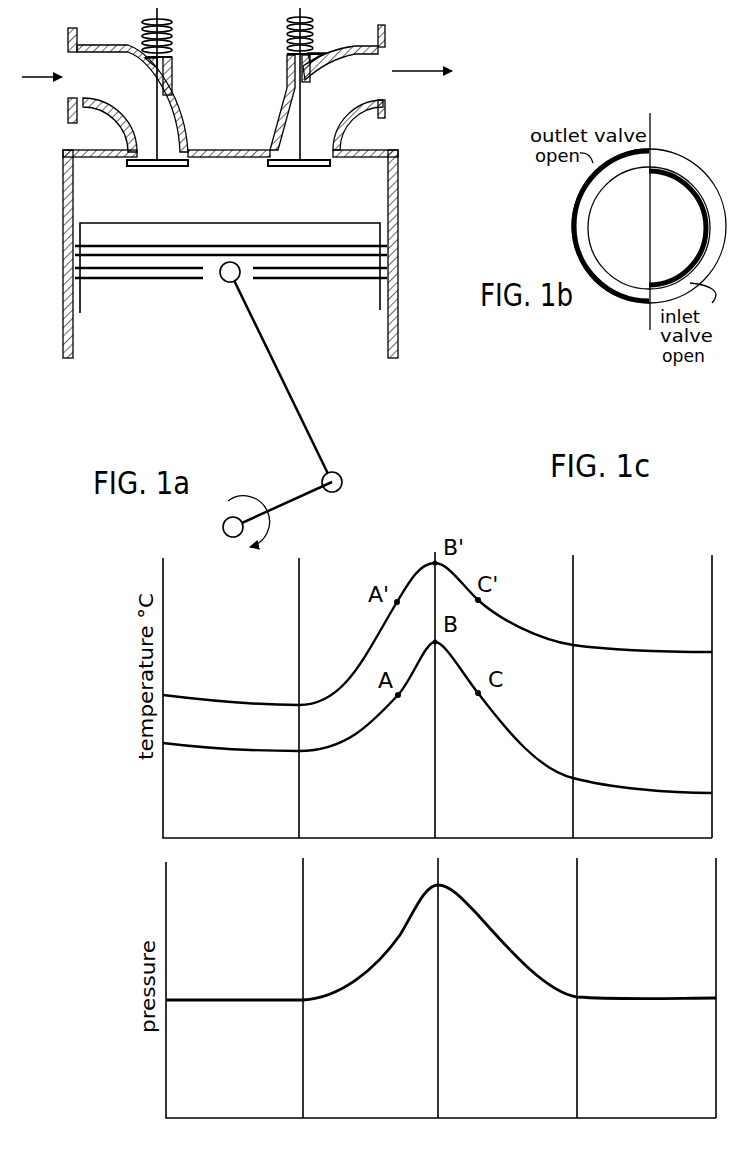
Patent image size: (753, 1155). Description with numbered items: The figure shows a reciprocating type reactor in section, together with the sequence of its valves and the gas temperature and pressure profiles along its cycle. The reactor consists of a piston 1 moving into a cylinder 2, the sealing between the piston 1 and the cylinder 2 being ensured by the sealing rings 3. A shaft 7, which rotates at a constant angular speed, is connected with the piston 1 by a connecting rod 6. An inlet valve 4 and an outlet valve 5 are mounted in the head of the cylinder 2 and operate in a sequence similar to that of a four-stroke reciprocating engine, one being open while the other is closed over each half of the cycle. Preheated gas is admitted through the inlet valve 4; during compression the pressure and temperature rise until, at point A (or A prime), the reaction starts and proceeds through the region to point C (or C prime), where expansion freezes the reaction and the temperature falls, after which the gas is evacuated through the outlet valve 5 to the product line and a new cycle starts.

The piston 1 is at (120, 237).
The cylinder 2 is at (398, 183).
The sealing rings 3 is at (399, 249).
The inlet valve 4 is at (183, 168).
The outlet valve 5 is at (292, 167).
The connecting rod 6 is at (285, 386).
The shaft 7 is at (277, 506).